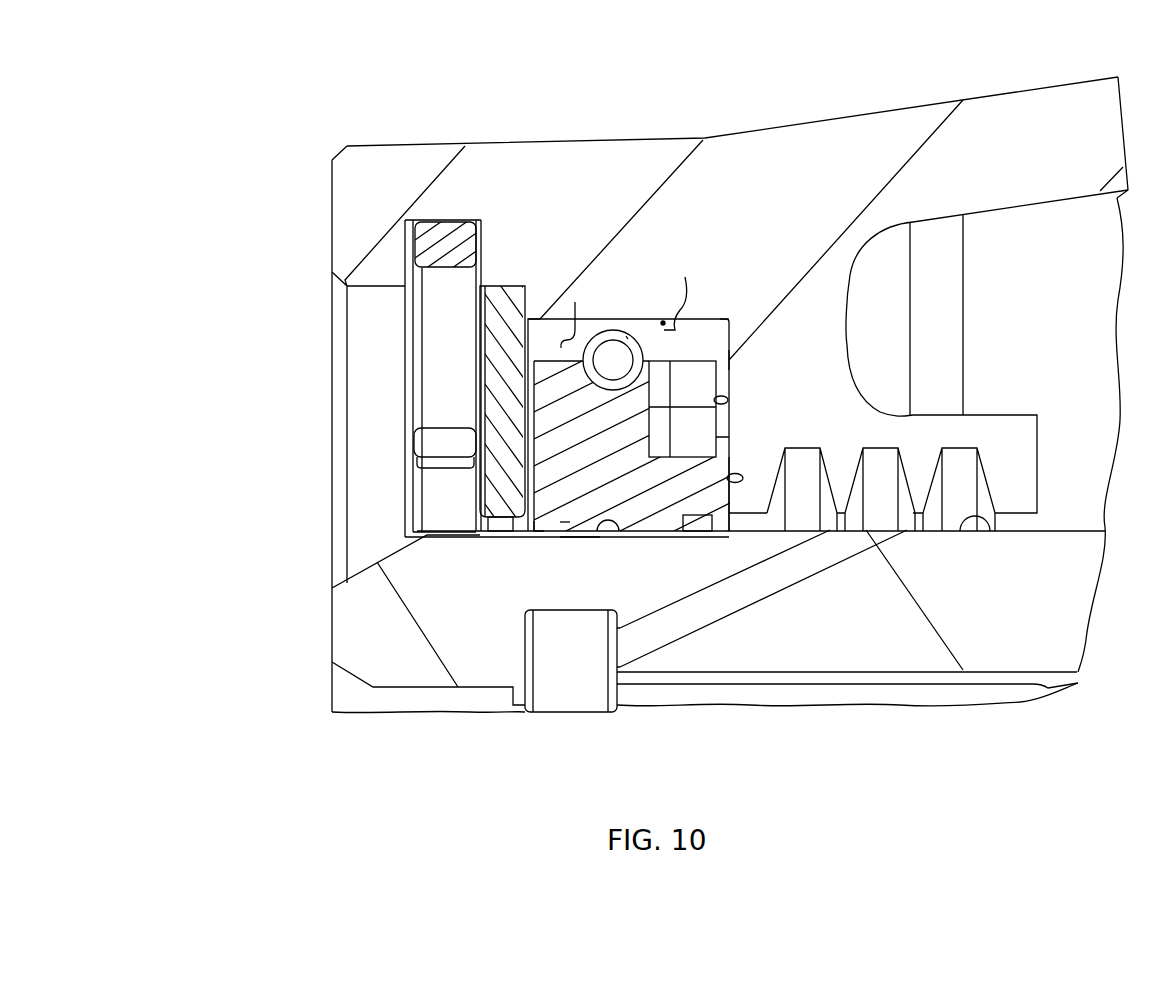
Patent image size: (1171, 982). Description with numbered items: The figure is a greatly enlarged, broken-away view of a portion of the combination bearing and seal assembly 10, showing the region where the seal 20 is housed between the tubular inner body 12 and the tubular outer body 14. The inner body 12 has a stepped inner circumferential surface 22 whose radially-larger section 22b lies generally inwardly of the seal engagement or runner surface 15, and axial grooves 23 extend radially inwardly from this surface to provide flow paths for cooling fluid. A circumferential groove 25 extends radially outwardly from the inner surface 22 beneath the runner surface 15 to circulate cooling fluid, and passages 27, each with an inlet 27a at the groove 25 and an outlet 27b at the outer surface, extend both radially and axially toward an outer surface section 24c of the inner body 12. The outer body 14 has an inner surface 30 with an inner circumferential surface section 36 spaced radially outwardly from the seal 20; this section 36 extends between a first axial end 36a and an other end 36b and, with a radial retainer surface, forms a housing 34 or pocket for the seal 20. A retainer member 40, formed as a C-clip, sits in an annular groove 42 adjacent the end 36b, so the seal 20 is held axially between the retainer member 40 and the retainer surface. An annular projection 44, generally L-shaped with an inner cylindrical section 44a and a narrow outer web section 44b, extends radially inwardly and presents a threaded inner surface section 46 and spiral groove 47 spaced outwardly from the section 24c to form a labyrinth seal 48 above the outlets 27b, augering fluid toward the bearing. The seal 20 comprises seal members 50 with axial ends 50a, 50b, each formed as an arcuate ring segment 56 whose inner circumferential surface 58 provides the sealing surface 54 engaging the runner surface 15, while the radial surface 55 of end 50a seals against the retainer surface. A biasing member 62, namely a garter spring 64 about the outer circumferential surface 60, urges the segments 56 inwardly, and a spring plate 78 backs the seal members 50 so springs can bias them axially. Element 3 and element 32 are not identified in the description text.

The combination bearing and seal assembly 10 is at (263, 167).
The tubular inner body 12 is at (302, 640).
The tubular outer body 14 is at (731, 118).
The seal engagement or runner surface 15 is at (565, 522).
The seal 20 is at (563, 288).
The inner circumferential surface 22 is at (896, 688).
The radially-larger section 22b is at (611, 538).
The axial grooves 23 is at (1005, 690).
The outer surface section 24c is at (992, 528).
The circumferential groove 25 is at (560, 613).
The passages 27 is at (732, 595).
The inlet 27a is at (620, 648).
The outlet 27b is at (868, 530).
The connector 3 is at (722, 400).
The inner surface 30 is at (1033, 207).
The top surface 32 is at (927, 104).
The housing 34 is at (707, 327).
The inner circumferential surface section 36 is at (680, 291).
The axial end of inner surface section 36a is at (732, 318).
The other end of inner surface section 36b is at (533, 310).
The retainer member 40 is at (424, 336).
The annular groove 42 is at (448, 222).
The annular projection 44 is at (850, 390).
The inner cylindrical section 44a is at (1020, 453).
The outer web section 44b is at (830, 335).
The inner circumferential surface section 46 is at (917, 527).
The spiral groove 47 is at (880, 462).
The labyrinth seal 48 is at (967, 552).
The seal members 50 is at (737, 463).
The axial end of seal member 50a is at (733, 358).
The opposing axial end of seal member 50b is at (535, 390).
The sealing surface 54 is at (578, 540).
The radial surface 55 is at (727, 477).
The arcuate seal ring segment 56 is at (550, 507).
The inner circumferential surface 58 is at (667, 535).
The outer circumferential surface 60 is at (578, 315).
The biasing member 62 is at (608, 330).
The garter spring 64 is at (626, 336).
The spring plate 78 is at (483, 385).